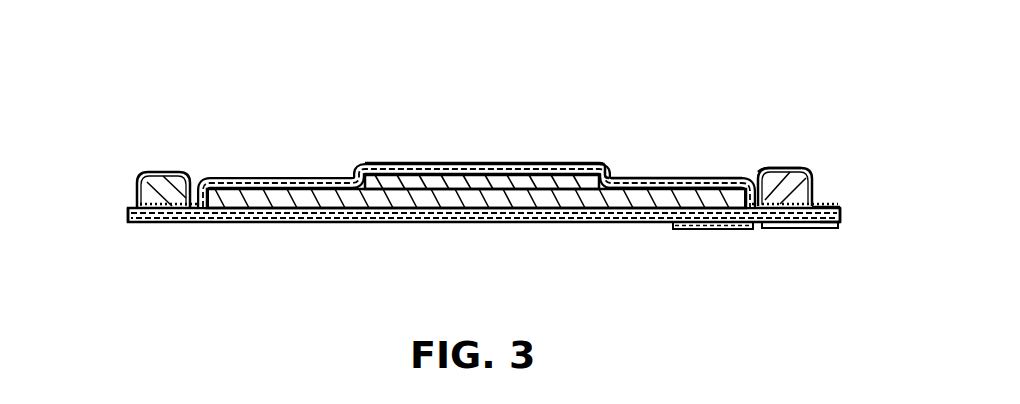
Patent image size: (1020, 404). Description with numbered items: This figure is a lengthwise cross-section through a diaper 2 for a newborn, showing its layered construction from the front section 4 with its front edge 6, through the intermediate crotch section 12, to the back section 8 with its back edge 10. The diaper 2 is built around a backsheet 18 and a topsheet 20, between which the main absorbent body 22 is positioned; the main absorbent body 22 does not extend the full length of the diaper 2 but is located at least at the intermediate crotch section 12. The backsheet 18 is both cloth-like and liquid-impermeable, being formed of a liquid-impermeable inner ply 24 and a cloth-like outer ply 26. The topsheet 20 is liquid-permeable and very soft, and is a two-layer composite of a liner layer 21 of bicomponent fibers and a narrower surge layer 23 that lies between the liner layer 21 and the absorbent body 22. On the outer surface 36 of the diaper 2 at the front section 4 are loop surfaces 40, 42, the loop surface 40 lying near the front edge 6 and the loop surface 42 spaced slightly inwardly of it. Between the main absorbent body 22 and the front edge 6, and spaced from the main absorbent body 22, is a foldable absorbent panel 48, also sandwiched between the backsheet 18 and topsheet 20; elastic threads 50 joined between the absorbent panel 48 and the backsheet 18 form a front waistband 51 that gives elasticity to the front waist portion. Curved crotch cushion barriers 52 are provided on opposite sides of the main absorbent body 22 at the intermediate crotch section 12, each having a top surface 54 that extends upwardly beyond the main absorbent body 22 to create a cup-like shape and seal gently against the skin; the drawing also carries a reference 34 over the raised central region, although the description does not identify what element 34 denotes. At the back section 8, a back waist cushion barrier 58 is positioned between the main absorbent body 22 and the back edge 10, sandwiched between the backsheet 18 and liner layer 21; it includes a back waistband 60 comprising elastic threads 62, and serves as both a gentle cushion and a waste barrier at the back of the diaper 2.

The diaper 2 is at (616, 68).
The front section 4 is at (747, 322).
The front edge 6 is at (836, 208).
The back section 8 is at (205, 308).
The back edge 10 is at (128, 213).
The intermediate crotch section 12 is at (365, 287).
The backsheet 18 is at (195, 238).
The topsheet 20 is at (623, 160).
The liner layer 21 is at (662, 178).
The main absorbent body 22 is at (274, 185).
The surge layer 23 is at (708, 178).
The inner ply 24 is at (840, 216).
The outer ply 26 is at (828, 224).
The top surface of cover 34 is at (403, 163).
The outer surface 36 is at (420, 225).
The loop surface 40 is at (797, 230).
The loop surface 42 is at (700, 230).
The foldable absorbent panel 48 is at (790, 168).
The elastic threads 50 is at (788, 222).
The front waistband 51 is at (799, 103).
The crotch cushion barrier 52 is at (512, 167).
The top surface 54 is at (430, 167).
The back waist cushion barrier 58 is at (167, 198).
The back waistband 60 is at (100, 238).
The elastic threads 62 is at (176, 208).